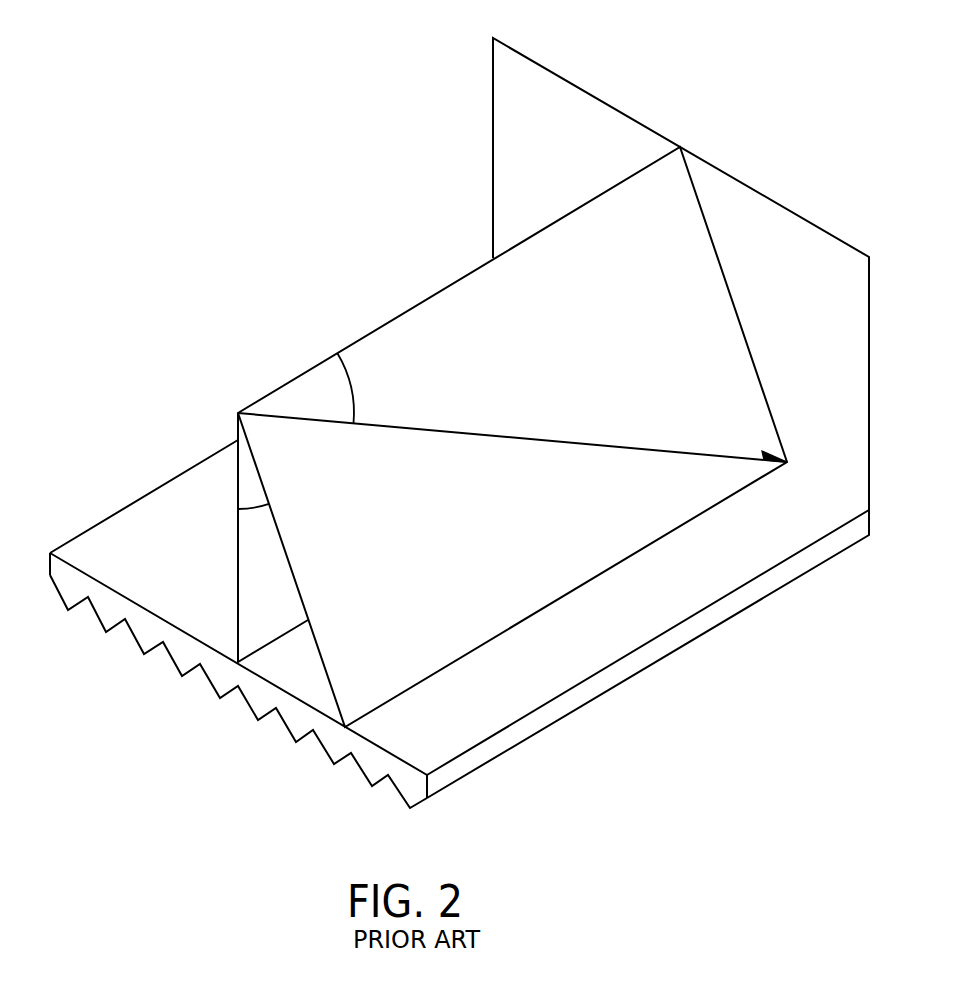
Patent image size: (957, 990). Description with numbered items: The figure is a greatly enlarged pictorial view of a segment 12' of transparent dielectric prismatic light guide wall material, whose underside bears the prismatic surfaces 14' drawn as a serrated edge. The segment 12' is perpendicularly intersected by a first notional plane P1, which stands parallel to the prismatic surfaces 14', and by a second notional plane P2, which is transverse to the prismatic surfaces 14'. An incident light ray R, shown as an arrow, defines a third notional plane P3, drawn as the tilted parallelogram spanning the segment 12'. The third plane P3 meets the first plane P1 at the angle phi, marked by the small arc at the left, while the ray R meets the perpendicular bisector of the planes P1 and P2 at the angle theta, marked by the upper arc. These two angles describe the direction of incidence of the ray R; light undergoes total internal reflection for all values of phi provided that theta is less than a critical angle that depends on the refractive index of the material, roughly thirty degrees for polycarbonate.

The segment of transparent dielectric wall material 12' is at (459, 619).
The prismatic surfaces 14' is at (238, 702).
The first notional plane P1 is at (283, 620).
The second notional plane P2 is at (572, 167).
The third notional plane P3 is at (440, 635).
The light ray R is at (408, 428).